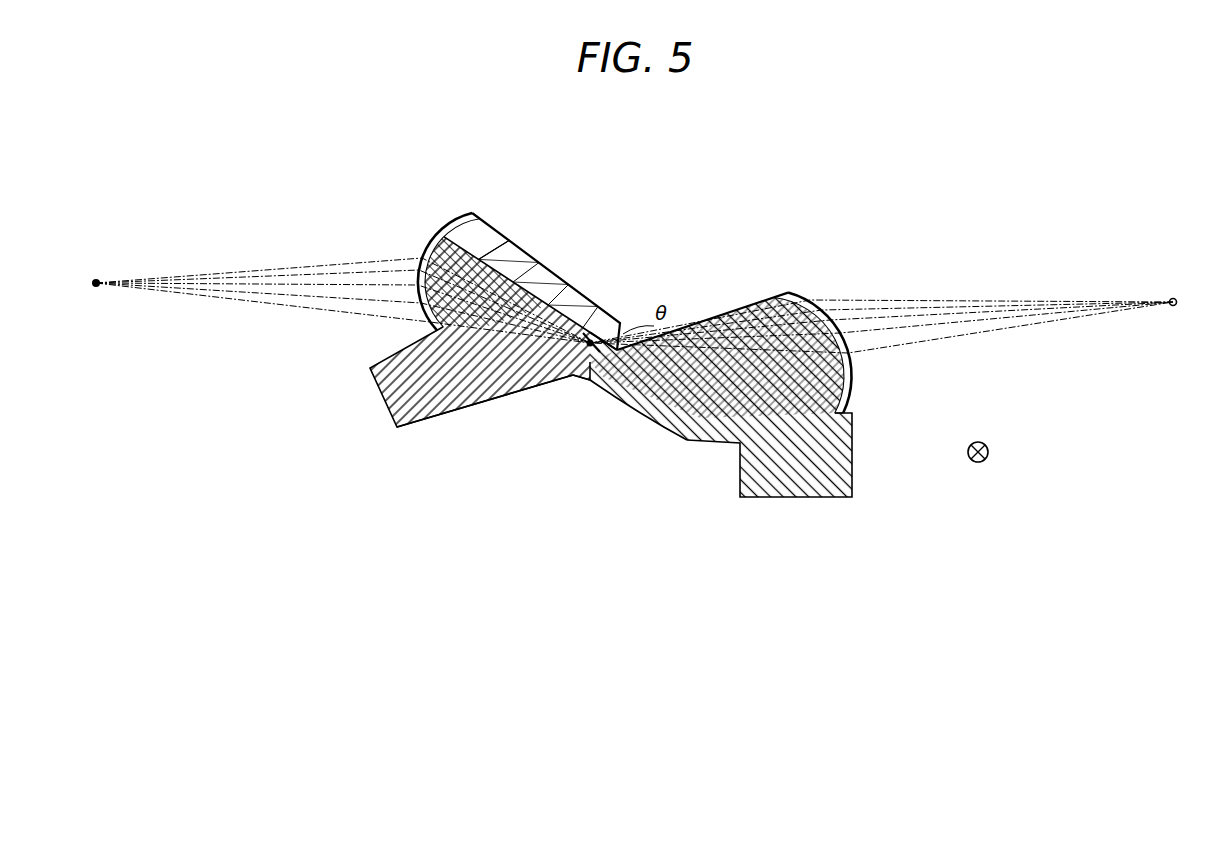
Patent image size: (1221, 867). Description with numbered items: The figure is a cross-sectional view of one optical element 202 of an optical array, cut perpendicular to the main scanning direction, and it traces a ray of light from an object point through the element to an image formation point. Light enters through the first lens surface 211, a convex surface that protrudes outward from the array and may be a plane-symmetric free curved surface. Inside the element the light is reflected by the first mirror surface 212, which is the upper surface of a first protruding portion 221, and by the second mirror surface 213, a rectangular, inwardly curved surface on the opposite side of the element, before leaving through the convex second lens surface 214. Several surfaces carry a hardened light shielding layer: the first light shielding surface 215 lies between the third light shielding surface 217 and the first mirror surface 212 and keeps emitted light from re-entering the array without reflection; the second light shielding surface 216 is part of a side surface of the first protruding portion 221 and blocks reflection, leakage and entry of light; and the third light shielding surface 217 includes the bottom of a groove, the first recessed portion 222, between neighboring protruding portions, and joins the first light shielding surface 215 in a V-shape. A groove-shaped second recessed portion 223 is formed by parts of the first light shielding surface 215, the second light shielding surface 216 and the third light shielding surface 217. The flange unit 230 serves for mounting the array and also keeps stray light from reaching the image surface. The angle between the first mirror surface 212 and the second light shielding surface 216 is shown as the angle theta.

The optical element 202 is at (718, 191).
The first lens surface 211 is at (467, 217).
The first mirror surface 212 is at (552, 266).
The second mirror surface 213 is at (627, 398).
The second lens surface 214 is at (790, 292).
The first light shielding surface 215 is at (537, 384).
The second light shielding surface 216 is at (708, 318).
The third light shielding surface 217 is at (573, 380).
The first protruding portion 221 is at (514, 243).
The first recessed portion 222 is at (494, 399).
The second recessed portion 223 is at (626, 338).
The flange unit 230 is at (774, 498).